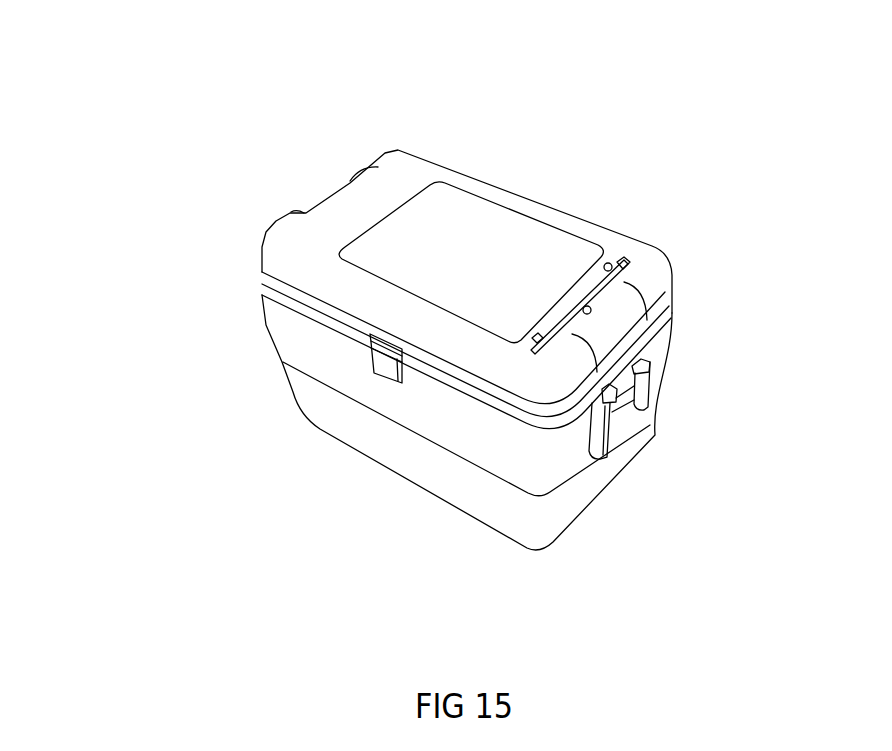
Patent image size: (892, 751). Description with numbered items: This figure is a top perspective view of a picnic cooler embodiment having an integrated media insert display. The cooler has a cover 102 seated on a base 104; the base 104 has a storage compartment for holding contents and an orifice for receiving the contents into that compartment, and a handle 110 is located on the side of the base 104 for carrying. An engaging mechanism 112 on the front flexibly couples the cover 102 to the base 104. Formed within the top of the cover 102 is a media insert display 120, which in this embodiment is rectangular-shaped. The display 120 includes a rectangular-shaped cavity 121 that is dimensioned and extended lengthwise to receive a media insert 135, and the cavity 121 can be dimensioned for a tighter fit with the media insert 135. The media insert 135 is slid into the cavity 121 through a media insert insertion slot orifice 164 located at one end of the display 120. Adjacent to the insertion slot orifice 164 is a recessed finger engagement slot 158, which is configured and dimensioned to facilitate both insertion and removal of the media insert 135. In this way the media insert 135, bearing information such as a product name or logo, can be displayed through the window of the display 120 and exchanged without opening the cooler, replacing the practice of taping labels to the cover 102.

The cover 102 is at (274, 222).
The base 104 is at (353, 447).
The handle 110 is at (614, 420).
The engaging mechanism 112 is at (372, 360).
The media insert display 120 is at (465, 202).
The cavity 121 is at (340, 248).
The media insert 135 is at (530, 248).
The recessed finger engagement slot 158 is at (591, 311).
The media insert insertion slot orifice 164 is at (626, 270).